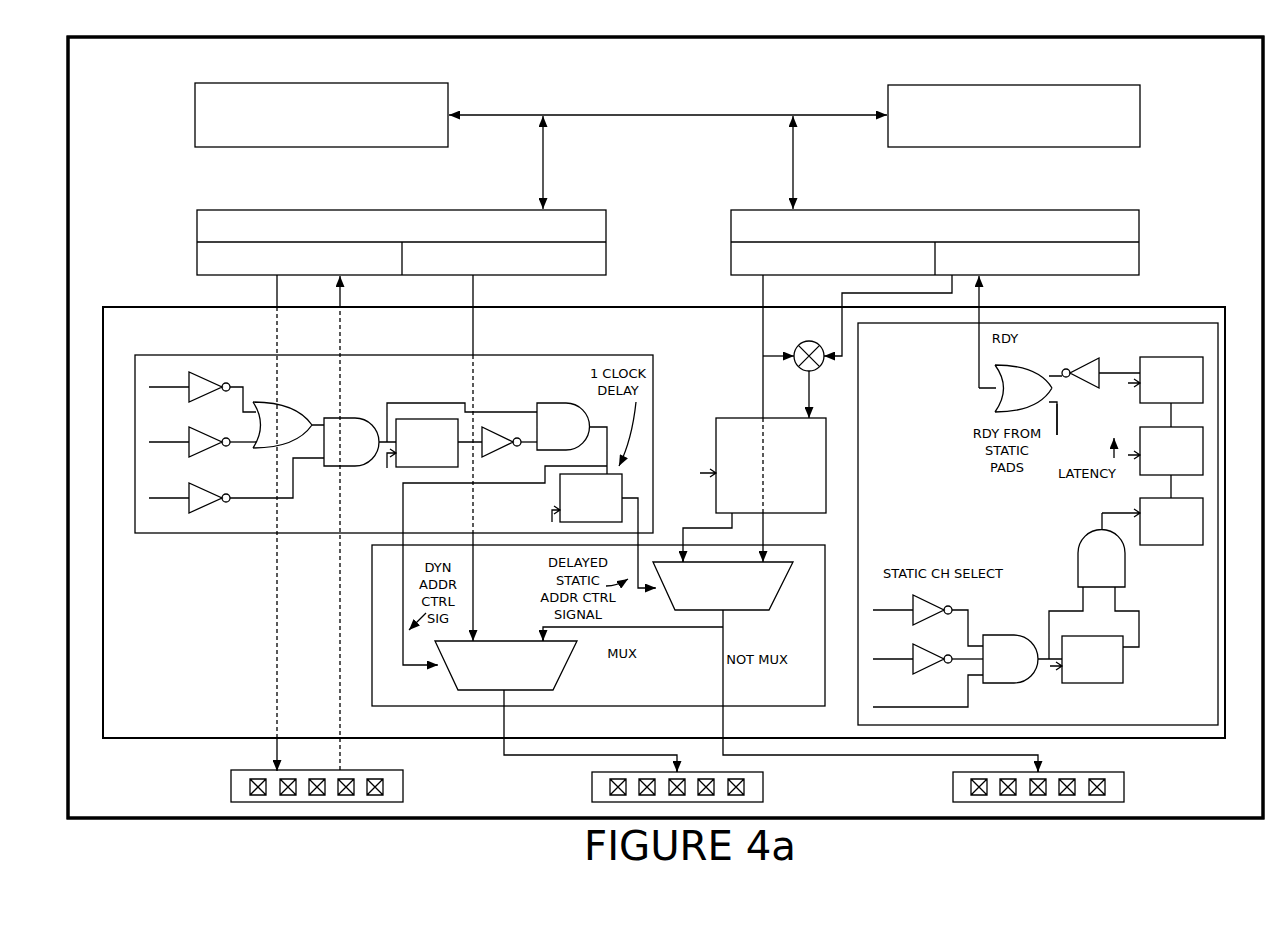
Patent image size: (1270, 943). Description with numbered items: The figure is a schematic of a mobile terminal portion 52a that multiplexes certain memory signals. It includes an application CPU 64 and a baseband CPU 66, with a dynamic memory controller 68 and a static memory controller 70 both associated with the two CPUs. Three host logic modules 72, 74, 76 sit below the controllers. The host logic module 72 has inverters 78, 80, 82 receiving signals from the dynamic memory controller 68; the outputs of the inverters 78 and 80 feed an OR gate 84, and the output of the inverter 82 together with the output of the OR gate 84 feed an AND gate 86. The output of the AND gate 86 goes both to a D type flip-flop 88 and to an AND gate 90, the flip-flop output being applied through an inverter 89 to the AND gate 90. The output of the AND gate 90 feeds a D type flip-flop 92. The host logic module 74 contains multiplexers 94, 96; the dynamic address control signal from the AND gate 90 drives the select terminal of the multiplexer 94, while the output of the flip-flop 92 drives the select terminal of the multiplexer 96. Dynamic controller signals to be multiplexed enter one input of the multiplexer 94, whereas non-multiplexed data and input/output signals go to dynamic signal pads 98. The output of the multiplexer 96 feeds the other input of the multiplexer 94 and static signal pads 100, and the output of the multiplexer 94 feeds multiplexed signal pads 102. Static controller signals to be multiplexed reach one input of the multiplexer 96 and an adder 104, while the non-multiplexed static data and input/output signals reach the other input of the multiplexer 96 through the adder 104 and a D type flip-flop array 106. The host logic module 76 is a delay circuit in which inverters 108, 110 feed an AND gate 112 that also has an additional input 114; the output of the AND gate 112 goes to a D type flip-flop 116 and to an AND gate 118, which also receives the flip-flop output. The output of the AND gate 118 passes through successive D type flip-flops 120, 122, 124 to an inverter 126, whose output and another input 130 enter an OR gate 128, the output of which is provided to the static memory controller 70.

The mobile terminal portion 52a is at (1041, 36).
The application CPU 64 is at (321, 115).
The baseband CPU 66 is at (1014, 116).
The dynamic memory controller 68 is at (197, 227).
The static memory controller 70 is at (1139, 228).
The host logic module 72 is at (563, 353).
The host logic module 74 is at (437, 711).
The host logic module 76 is at (856, 532).
The inverter 78 is at (204, 379).
The inverter 80 is at (204, 434).
The inverter 82 is at (204, 490).
The OR gate 84 is at (288, 405).
The AND gate 86 is at (347, 419).
The D type flip-flop 88 is at (434, 443).
The inverter 89 is at (500, 453).
The AND gate 90 is at (505, 534).
The D type flip-flop 92 is at (604, 531).
The multiplexer 94 is at (565, 676).
The multiplexer 96 is at (778, 590).
The dynamic signal pads 98 is at (231, 791).
The static signal pads 100 is at (953, 791).
The multiplexed signal pads 102 is at (592, 791).
The adder 104 is at (799, 346).
The D type flip-flop array 106 is at (754, 490).
The inverter 108 is at (911, 601).
The inverter 110 is at (926, 651).
The AND gate 112 is at (1033, 635).
The additional input 114 is at (970, 707).
The D type flip-flop 116 is at (1094, 635).
The AND gate 118 is at (1101, 550).
The D type flip-flop 120 is at (1152, 510).
The D type flip-flop 122 is at (1165, 439).
The D type flip-flop 124 is at (1165, 380).
The inverter 126 is at (1086, 367).
The OR gate 128 is at (1020, 400).
The input 130 is at (1058, 424).